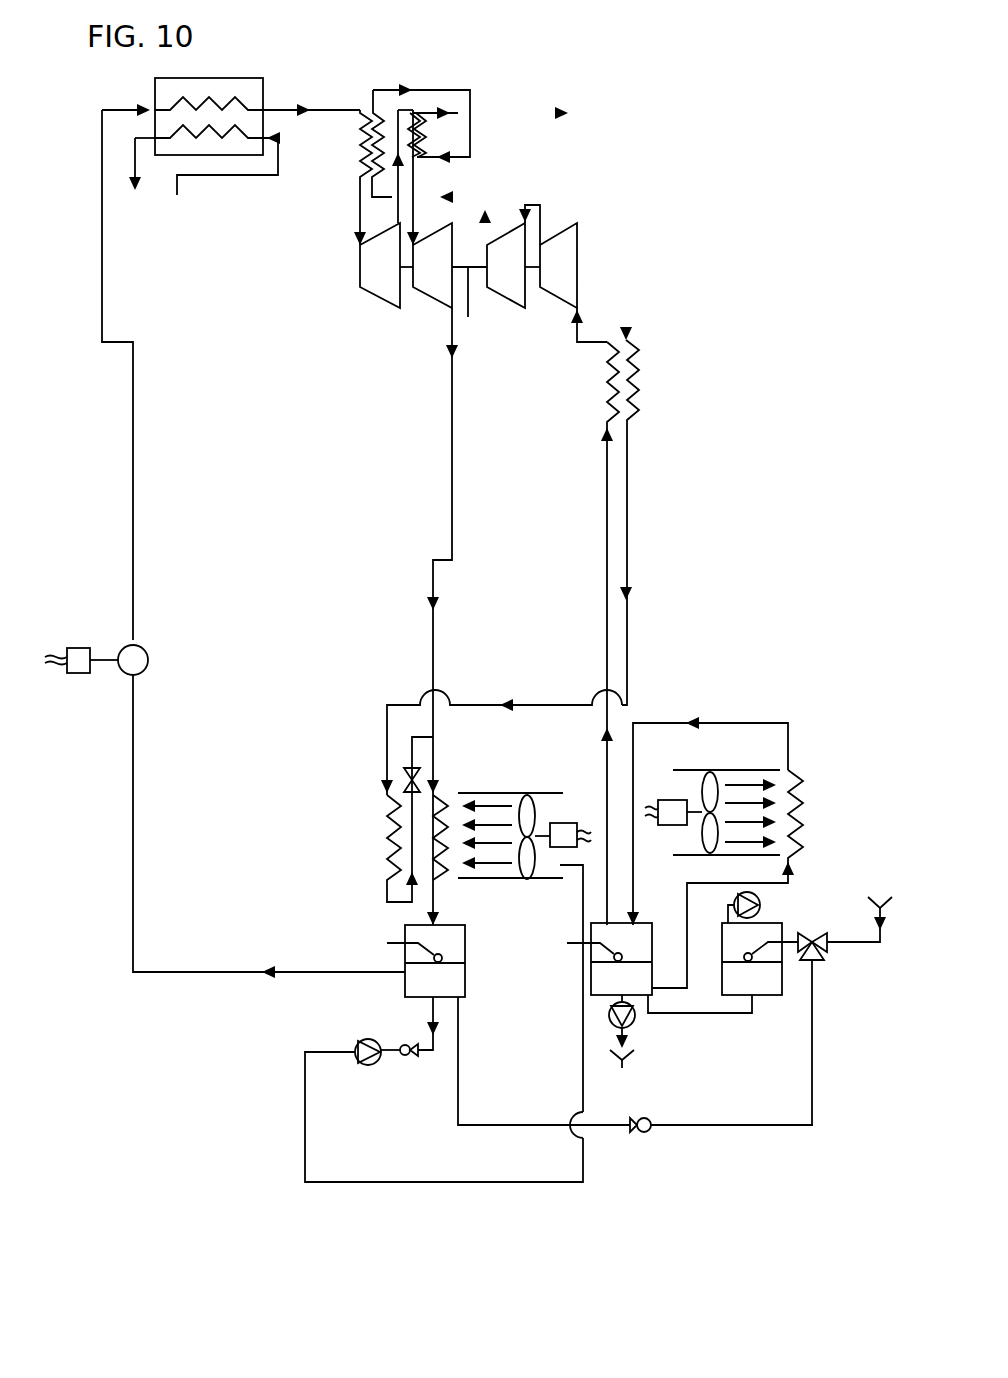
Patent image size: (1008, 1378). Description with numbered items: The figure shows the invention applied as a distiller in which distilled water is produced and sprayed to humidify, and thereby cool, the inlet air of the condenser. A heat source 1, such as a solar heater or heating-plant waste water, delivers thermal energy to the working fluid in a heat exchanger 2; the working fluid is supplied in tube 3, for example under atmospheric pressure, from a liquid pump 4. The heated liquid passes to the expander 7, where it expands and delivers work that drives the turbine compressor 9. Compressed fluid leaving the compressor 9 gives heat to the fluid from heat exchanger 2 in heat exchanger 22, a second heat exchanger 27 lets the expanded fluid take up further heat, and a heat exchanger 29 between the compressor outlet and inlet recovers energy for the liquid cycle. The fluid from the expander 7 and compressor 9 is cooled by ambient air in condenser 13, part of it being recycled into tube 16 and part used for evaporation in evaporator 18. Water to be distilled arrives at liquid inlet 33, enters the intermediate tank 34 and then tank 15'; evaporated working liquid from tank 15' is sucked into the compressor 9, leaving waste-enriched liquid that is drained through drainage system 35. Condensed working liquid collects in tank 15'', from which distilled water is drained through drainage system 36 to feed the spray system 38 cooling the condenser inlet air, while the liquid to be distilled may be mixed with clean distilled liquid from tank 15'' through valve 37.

The heat source 1 is at (233, 178).
The heat exchanger 2 is at (227, 77).
The tube 3 is at (133, 477).
The liquid pump 4 is at (137, 658).
The expander 7 is at (392, 343).
The turbine compressor 9 is at (527, 343).
The condenser 13 is at (510, 777).
The tank 15' is at (625, 995).
The tank 15'' is at (475, 987).
The tube 16 is at (133, 822).
The evaporator 18 is at (818, 765).
The heat exchanger 22 is at (357, 150).
The second heat exchanger 27 is at (427, 142).
The heat exchanger 29 is at (652, 388).
The liquid inlet 33 is at (887, 880).
The intermediate tank 34 is at (767, 977).
The drainage system 35 is at (610, 1067).
The drainage system 36 is at (370, 1088).
The valve 37 is at (827, 960).
The spray system 38 is at (560, 876).